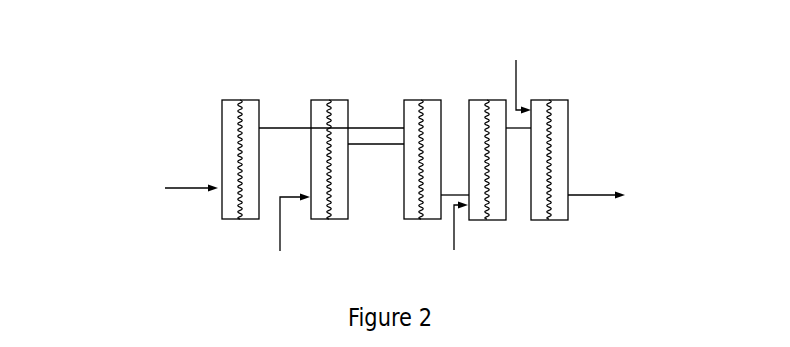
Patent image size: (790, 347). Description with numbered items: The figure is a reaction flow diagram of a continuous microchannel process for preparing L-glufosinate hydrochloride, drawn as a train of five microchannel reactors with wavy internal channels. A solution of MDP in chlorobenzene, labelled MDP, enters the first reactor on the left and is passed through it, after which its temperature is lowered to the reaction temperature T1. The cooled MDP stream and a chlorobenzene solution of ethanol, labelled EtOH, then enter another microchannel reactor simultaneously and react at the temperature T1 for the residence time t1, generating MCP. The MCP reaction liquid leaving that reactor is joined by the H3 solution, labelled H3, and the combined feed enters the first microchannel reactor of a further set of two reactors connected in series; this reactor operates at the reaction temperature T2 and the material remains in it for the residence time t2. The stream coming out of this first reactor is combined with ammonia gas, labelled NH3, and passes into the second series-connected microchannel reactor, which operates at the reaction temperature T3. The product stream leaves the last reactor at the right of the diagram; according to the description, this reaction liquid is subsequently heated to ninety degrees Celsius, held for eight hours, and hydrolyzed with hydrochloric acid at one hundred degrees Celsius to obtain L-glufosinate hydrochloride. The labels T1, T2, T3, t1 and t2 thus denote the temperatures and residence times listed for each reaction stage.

The reaction temperature T1 is at (422, 173).
The reaction temperature T2 is at (487, 175).
The reaction temperature T3 is at (549, 175).
The residence time t1 is at (347, 101).
The residence time t2 is at (504, 93).
The MDP solution MDP is at (166, 188).
The ethanol solution EtOH is at (286, 239).
The H3 solution H3 is at (459, 241).
The ammonia gas NH3 is at (519, 74).